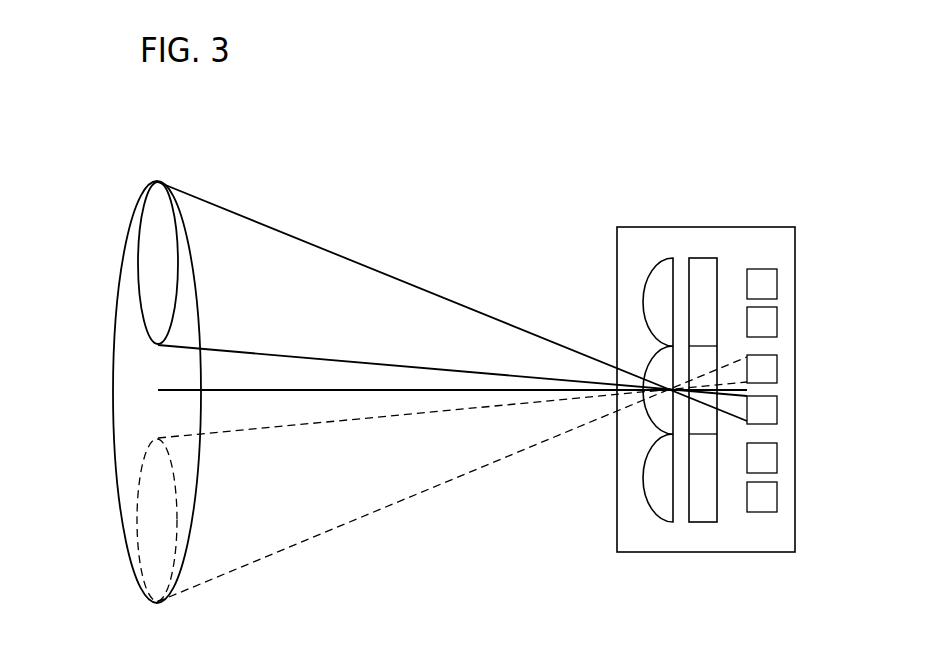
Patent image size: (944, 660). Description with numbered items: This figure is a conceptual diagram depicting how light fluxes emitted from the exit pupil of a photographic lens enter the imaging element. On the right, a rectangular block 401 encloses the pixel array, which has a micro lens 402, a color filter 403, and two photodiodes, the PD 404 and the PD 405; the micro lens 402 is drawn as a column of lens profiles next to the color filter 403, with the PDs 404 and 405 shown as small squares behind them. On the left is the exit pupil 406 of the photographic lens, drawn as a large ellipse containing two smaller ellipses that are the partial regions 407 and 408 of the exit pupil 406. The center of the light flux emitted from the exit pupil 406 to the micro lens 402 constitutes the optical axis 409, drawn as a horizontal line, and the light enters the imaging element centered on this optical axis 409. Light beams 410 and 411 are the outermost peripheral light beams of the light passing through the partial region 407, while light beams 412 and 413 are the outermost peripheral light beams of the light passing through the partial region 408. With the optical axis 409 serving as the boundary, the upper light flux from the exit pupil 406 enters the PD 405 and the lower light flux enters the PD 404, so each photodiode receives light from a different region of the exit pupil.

The light source unit housing 401 is at (766, 552).
The micro lens 402 is at (653, 265).
The color filter 403 is at (702, 255).
The PD 404 is at (777, 367).
The PD 405 is at (777, 412).
The exit pupil 406 is at (194, 273).
The partial region 407 is at (139, 283).
The partial region 408 is at (136, 497).
The optical axis 409 is at (170, 390).
The light beam 410 is at (393, 273).
The light beam 411 is at (273, 355).
The light beam 412 is at (340, 527).
The light beam 413 is at (362, 422).